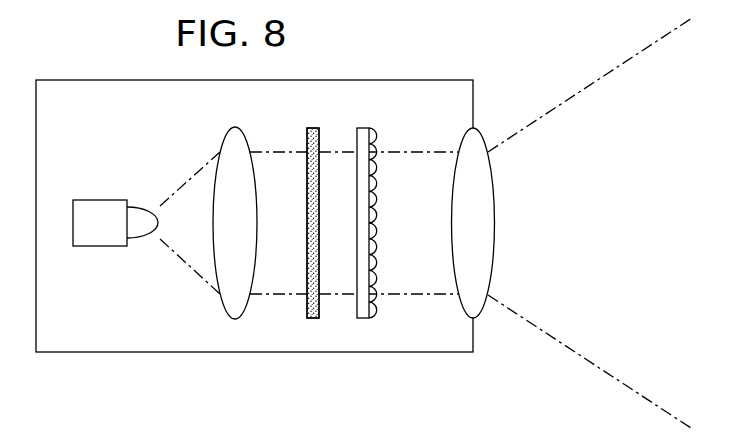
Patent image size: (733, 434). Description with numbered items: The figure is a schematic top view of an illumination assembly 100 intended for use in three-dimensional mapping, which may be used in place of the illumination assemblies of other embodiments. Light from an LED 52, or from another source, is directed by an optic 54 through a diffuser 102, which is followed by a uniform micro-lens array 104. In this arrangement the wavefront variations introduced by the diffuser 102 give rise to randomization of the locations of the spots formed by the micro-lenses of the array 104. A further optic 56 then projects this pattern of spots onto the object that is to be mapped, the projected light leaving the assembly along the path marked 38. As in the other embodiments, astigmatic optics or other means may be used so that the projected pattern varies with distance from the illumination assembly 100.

The illumination assembly 100 is at (121, 80).
The LED 52 is at (101, 200).
The optic 54 is at (223, 139).
The diffuser 102 is at (306, 136).
The uniform micro-lens array 104 is at (357, 130).
The optic 56 is at (461, 140).
The output light beam 38 is at (557, 107).